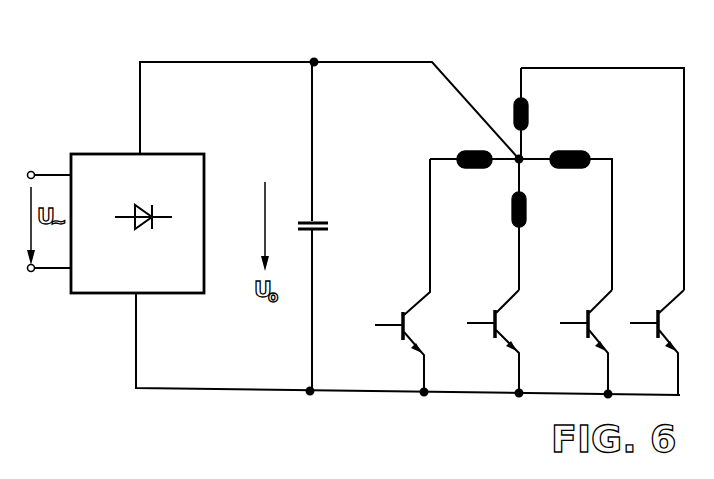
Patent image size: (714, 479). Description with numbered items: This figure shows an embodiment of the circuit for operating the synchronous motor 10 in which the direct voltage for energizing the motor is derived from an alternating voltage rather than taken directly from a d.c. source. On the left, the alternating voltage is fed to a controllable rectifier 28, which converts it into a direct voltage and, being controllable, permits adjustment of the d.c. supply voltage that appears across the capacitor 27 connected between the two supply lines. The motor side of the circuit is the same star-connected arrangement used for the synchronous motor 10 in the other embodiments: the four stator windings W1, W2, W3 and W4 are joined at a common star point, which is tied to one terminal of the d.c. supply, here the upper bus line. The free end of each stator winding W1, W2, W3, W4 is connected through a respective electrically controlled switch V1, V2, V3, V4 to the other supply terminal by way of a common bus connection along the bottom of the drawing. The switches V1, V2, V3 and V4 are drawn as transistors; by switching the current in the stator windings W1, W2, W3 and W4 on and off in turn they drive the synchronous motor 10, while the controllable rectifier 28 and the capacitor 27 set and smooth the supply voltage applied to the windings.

The synchronous motor 10 is at (590, 61).
The capacitor 27 is at (328, 222).
The controllable rectifier 28 is at (182, 160).
The stator winding W1 is at (475, 168).
The stator winding W2 is at (527, 208).
The stator winding W3 is at (575, 150).
The stator winding W4 is at (514, 100).
The electrically controlled switch V1 is at (410, 330).
The electrically controlled switch V2 is at (502, 328).
The electrically controlled switch V3 is at (595, 328).
The electrically controlled switch V4 is at (665, 328).